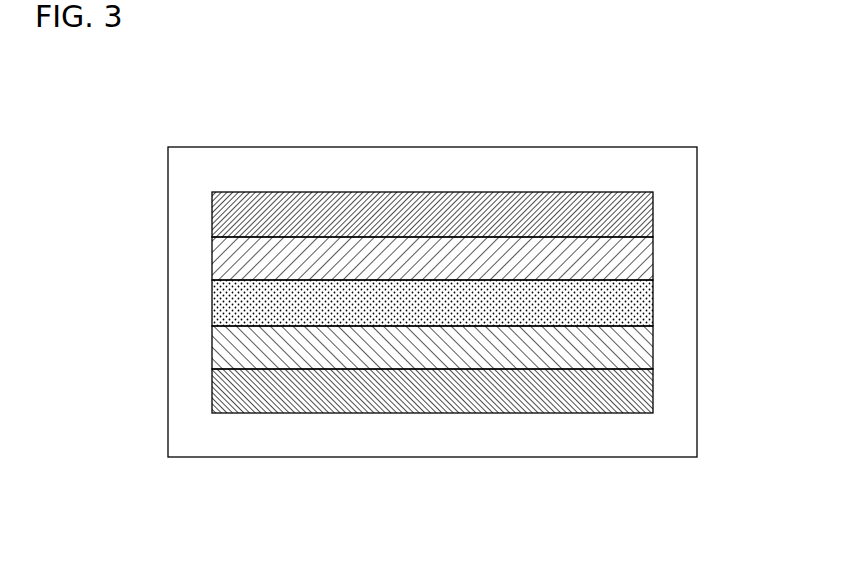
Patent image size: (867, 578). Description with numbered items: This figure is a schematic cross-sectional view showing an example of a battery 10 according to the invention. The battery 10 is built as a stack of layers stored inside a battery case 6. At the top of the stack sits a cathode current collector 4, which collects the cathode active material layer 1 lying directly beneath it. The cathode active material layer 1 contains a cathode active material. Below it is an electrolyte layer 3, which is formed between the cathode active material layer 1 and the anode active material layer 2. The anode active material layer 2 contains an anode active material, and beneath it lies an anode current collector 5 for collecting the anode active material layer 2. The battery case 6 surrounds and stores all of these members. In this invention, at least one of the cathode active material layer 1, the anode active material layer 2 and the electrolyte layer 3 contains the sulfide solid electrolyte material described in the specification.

The battery 10 is at (683, 104).
The battery case 6 is at (673, 163).
The cathode current collector 4 is at (640, 207).
The cathode active material layer 1 is at (640, 250).
The electrolyte layer 3 is at (640, 294).
The anode active material layer 2 is at (640, 339).
The anode current collector 5 is at (640, 383).